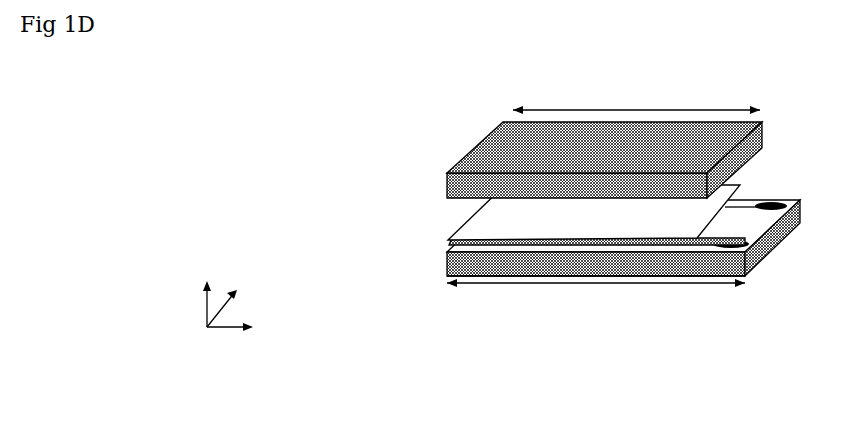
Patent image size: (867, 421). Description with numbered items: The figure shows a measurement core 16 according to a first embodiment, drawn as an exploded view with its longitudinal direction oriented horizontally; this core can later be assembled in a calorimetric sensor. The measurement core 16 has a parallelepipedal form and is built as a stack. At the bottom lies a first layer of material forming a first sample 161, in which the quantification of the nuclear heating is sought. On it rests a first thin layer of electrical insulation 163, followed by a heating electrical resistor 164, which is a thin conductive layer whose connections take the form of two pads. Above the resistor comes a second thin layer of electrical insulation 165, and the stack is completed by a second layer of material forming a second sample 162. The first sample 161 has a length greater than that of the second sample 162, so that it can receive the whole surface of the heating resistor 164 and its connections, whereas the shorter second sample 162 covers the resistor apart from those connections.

The measurement core 16 is at (266, 208).
The first sample 161 is at (512, 262).
The second sample 162 is at (447, 183).
The first thin layer of electrical insulation 163 is at (452, 281).
The heating electrical resistor 164 is at (480, 243).
The second thin layer of electrical insulation 165 is at (473, 207).